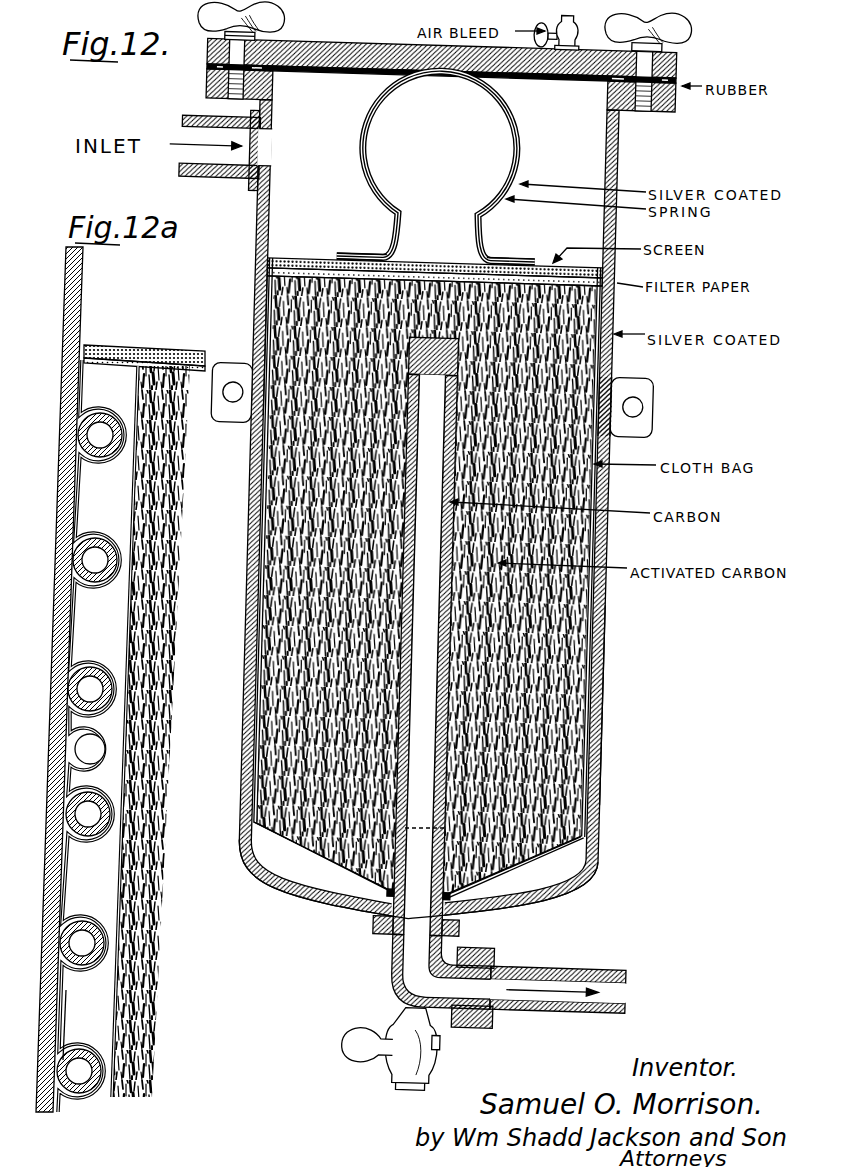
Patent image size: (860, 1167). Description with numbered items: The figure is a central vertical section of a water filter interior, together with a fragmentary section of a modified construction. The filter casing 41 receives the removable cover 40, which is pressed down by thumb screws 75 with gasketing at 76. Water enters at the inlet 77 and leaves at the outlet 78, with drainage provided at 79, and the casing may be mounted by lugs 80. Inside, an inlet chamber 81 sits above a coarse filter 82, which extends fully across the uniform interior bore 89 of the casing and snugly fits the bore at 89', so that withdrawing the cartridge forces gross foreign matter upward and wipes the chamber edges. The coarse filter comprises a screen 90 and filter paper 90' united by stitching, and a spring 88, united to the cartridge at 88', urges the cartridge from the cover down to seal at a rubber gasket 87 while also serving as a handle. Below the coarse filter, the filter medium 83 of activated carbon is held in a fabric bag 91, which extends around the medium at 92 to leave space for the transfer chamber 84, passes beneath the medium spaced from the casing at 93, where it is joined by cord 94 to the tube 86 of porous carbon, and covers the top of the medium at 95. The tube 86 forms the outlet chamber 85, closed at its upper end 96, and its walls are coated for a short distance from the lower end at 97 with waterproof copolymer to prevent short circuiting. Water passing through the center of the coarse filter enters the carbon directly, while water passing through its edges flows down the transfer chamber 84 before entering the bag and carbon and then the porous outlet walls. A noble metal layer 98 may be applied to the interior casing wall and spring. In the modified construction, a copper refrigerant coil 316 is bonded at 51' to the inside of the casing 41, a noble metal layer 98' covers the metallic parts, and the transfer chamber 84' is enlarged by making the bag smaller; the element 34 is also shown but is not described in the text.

In FIG. 12, the removable cover 40 is at (380, 58).
In FIG. 12, the thumb screws 75 is at (271, 24).
In FIG. 12, the gasketing 76 is at (210, 68).
In FIG. 12, the inlet 77 is at (199, 182).
In FIG. 12, the outlet 78 is at (628, 992).
In FIG. 12, the drainage 79 is at (420, 1068).
In FIG. 12, the lugs 80 is at (243, 364).
In FIG. 12, the inlet chamber 81 is at (431, 166).
In FIG. 12, the coarse filter 82 is at (268, 259).
In FIG. 12, the filter medium 83 is at (573, 677).
In FIG. 12A, the filter medium 83 is at (138, 909).
In FIG. 12, the transfer chamber 84 is at (633, 705).
In FIG. 12, the outlet chamber 85 is at (425, 655).
In FIG. 12, the tube of porous carbon 86 is at (406, 790).
In FIG. 12, the rubber gasket 87 is at (353, 905).
In FIG. 12, the spring 88 is at (431, 165).
In FIG. 12, the spring attachment 88' is at (438, 245).
In FIG. 12, the interior bore 89 is at (303, 575).
In FIG. 12, the bore fit 89' is at (296, 512).
In FIG. 12, the screen 90 is at (434, 252).
In FIG. 12A, the screen 90 is at (144, 342).
In FIG. 12, the filter paper 90' is at (413, 294).
In FIG. 12A, the filter paper 90' is at (144, 376).
In FIG. 12, the fabric bag 91 is at (606, 628).
In FIG. 12A, the fabric bag 91 is at (110, 968).
In FIG. 12, the bag side portion 92 is at (607, 597).
In FIG. 12, the bag bottom portion 93 is at (317, 850).
In FIG. 12, the cord 94 is at (383, 896).
In FIG. 12, the bag top portion 95 is at (424, 268).
In FIG. 12, the closed end 96 is at (441, 353).
In FIG. 12, the waterproof coating 97 is at (463, 882).
In FIG. 12, the noble metal layer 98 is at (552, 867).
In FIG. 12, the filter casing 41 is at (258, 309).
In FIG. 12A, the filter casing 41 is at (52, 898).
In FIG. 12A, the bond 51' is at (89, 753).
In FIG. 12A, the transfer chamber 84' is at (153, 731).
In FIG. 12A, the rod 34 is at (110, 760).
In FIG. 12A, the refrigerant coil 316 is at (110, 822).
In FIG. 12A, the noble metal layer 98' is at (82, 1025).